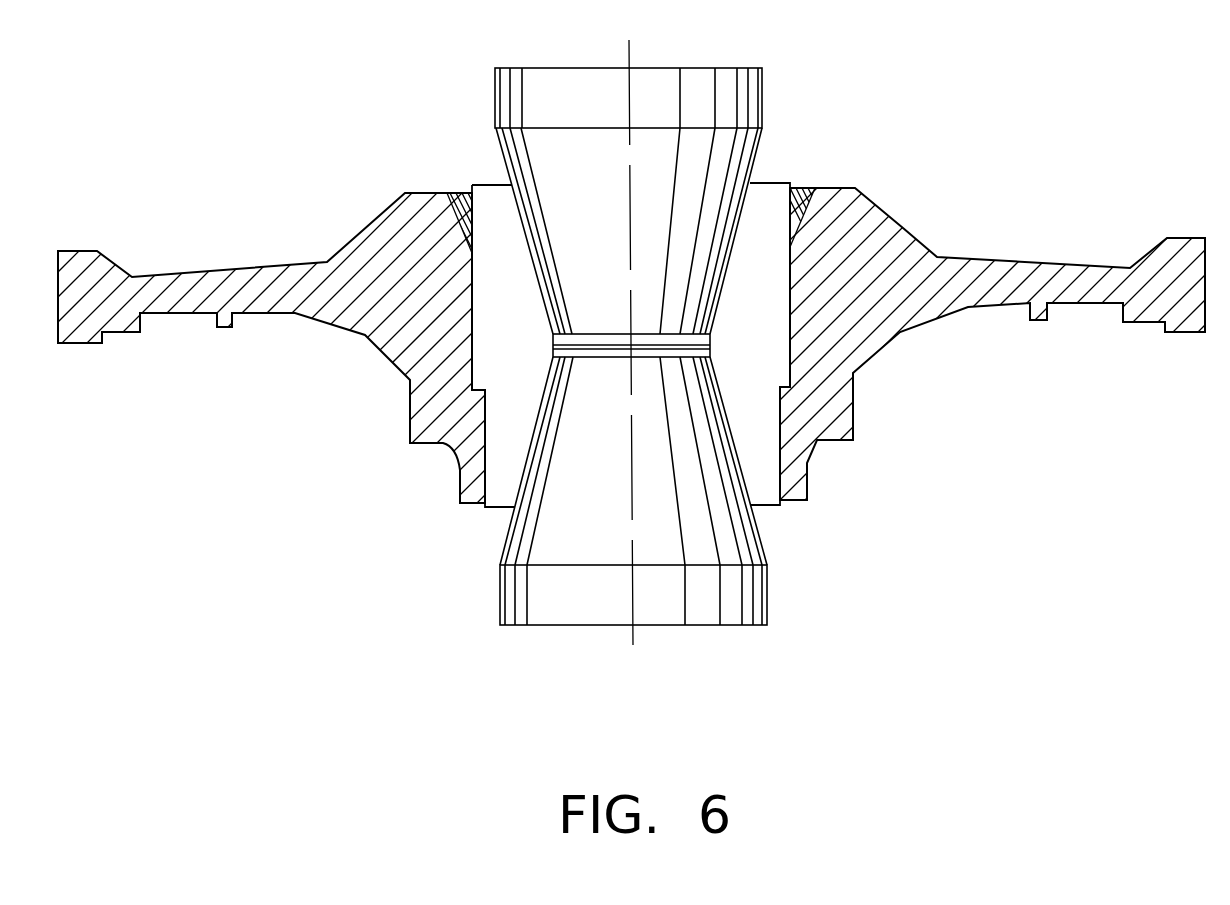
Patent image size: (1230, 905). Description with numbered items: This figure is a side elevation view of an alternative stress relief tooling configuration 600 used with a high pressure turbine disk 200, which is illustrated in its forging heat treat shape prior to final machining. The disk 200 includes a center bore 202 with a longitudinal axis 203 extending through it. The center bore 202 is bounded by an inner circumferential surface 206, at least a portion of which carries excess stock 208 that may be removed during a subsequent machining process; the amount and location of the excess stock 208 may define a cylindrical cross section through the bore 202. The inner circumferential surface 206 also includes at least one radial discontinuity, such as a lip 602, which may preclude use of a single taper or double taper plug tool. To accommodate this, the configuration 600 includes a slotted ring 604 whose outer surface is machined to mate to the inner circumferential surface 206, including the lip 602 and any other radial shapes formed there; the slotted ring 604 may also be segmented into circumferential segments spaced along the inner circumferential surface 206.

The stress relief tooling configuration 600 is at (303, 95).
The high pressure turbine disk 200 is at (362, 278).
The center bore 202 is at (493, 518).
The longitudinal axis 203 is at (630, 53).
The inner circumferential surface 206 is at (471, 297).
The excess stock 208 is at (457, 197).
The lip 602 is at (480, 390).
The slotted ring 604 is at (762, 213).